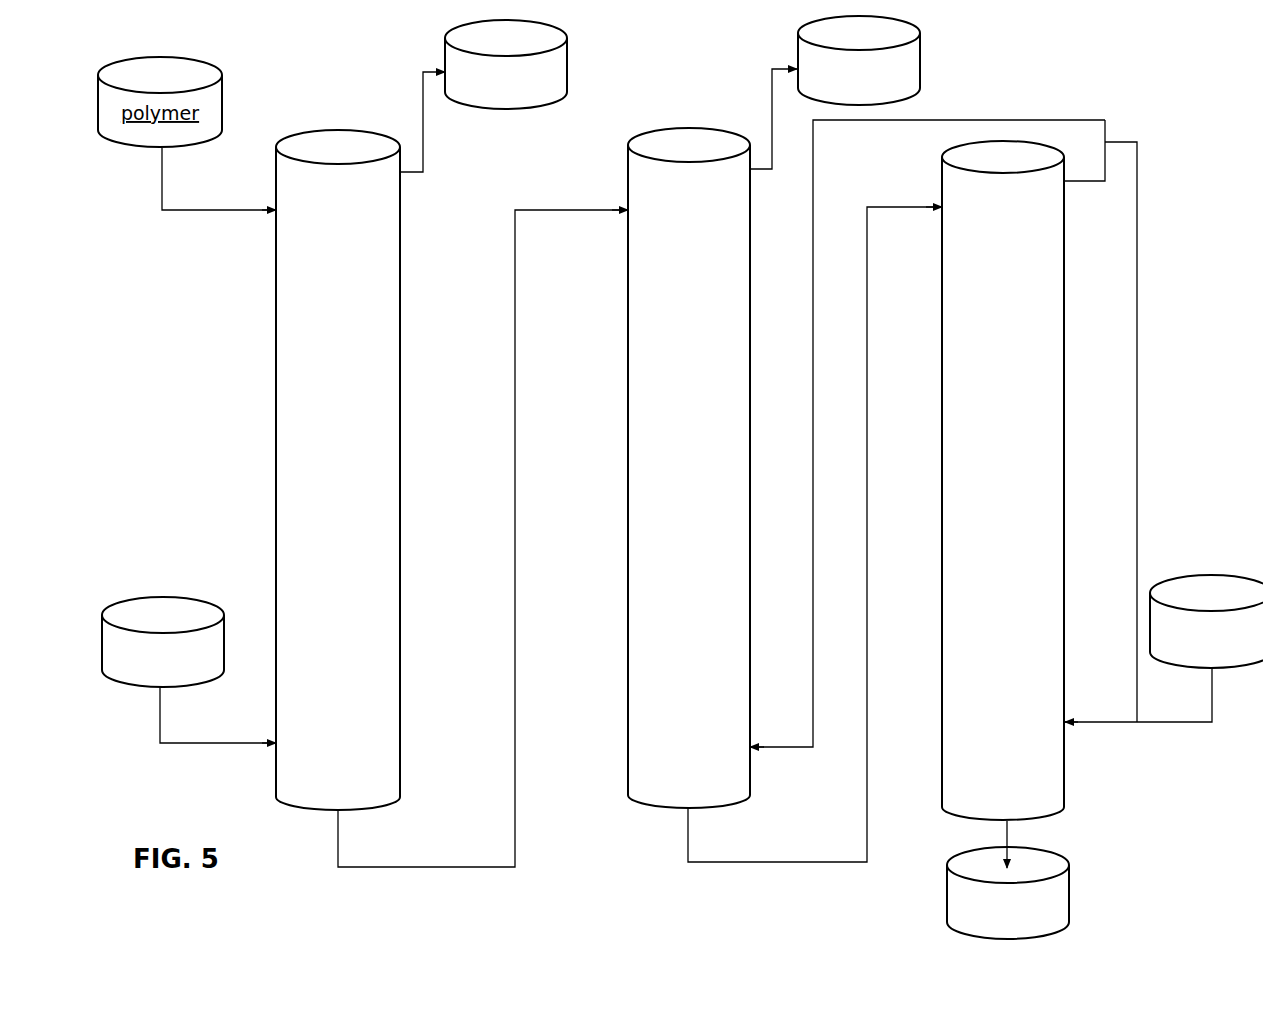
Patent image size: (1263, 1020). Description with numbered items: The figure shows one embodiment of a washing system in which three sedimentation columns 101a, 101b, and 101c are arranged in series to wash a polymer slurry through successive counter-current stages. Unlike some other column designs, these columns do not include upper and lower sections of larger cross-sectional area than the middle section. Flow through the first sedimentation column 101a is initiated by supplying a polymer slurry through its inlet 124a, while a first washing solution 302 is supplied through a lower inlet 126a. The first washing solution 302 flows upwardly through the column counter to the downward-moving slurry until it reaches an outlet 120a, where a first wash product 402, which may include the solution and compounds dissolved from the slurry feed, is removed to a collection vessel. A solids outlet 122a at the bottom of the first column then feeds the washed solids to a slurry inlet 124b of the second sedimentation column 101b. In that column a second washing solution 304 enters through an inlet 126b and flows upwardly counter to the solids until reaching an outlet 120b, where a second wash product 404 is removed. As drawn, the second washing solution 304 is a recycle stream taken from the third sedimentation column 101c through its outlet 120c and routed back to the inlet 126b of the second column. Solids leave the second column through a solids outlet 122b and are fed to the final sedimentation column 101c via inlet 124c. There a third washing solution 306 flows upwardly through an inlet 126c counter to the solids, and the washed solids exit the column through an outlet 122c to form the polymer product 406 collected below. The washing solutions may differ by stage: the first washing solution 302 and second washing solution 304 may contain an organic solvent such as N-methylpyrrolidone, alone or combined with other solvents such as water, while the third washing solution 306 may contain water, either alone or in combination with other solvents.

The first sedimentation column 101a is at (287, 183).
The second sedimentation column 101b is at (650, 195).
The third sedimentation column 101c is at (953, 193).
The outlet 120a is at (402, 173).
The outlet 120b is at (753, 173).
The outlet 120c is at (1067, 183).
The solids outlet 122a is at (335, 813).
The solids outlet 122b is at (687, 810).
The outlet 122c is at (1015, 823).
The inlet 124a is at (272, 218).
The slurry inlet 124b is at (625, 215).
The inlet 124c is at (940, 212).
The inlet 126a is at (272, 747).
The inlet 126b is at (753, 755).
The inlet 126c is at (1072, 728).
The first washing solution 302 is at (189, 670).
The second washing solution 304 is at (963, 118).
The third washing solution 306 is at (1164, 648).
The first wash product 402 is at (506, 64).
The second wash product 404 is at (859, 60).
The polymer product 406 is at (1008, 893).